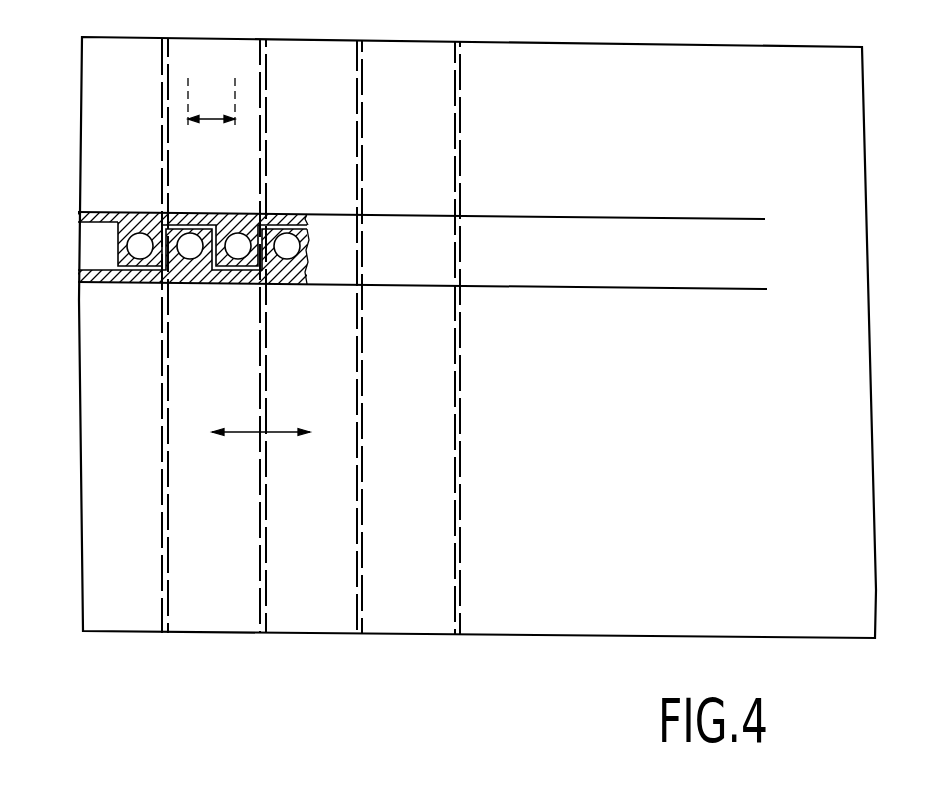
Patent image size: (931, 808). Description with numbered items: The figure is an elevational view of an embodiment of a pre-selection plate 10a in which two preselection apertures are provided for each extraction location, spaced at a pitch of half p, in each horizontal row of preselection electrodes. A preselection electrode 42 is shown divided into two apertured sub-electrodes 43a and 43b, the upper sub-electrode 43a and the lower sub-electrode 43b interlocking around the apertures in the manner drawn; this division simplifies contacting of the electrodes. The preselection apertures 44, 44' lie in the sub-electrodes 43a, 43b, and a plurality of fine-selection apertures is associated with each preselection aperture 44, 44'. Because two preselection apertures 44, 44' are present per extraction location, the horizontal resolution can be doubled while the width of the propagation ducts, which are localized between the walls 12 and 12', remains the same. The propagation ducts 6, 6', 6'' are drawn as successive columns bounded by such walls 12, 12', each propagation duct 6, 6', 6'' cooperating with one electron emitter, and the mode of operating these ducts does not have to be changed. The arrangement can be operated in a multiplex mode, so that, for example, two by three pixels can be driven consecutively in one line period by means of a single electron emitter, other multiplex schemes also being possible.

The propagation duct 6 is at (211, 80).
The propagation duct 6' is at (331, 316).
The propagation duct 6'' is at (426, 317).
The pre-selection plate 10a is at (640, 67).
The wall 12 is at (174, 361).
The wall 12' is at (271, 361).
The preselection electrode 42 is at (78, 241).
The apertured sub-electrode 43a is at (128, 212).
The apertured sub-electrode 43b is at (100, 282).
The preselection aperture 44 is at (193, 283).
The preselection aperture 44' is at (244, 283).